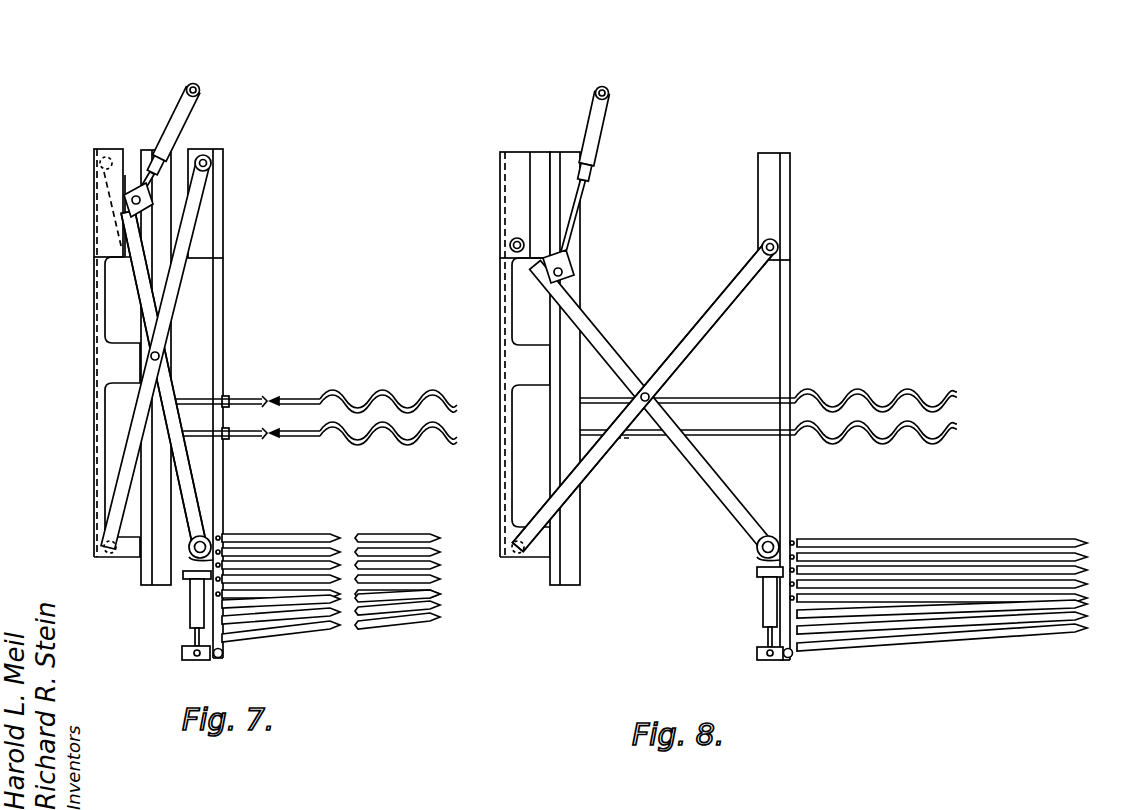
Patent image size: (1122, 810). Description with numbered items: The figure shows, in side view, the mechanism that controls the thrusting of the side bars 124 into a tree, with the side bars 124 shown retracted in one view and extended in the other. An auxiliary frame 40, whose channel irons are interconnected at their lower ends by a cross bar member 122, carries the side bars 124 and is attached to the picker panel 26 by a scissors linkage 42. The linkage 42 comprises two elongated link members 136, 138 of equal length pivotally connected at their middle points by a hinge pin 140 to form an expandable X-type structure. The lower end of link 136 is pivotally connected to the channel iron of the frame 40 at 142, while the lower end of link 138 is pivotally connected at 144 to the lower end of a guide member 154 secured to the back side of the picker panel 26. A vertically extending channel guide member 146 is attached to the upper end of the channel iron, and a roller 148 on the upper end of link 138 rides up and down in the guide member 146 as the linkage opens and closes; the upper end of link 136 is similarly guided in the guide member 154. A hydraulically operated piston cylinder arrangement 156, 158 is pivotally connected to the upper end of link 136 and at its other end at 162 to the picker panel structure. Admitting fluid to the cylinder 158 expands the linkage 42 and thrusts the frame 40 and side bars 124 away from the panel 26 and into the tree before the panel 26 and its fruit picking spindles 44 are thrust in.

In FIG. 7, the picker panel 26 is at (158, 588).
In FIG. 8, the picker panel 26 is at (570, 585).
In FIG. 7, the auxiliary frame 40 is at (225, 268).
In FIG. 7, the scissors linkage 42 is at (203, 484).
In FIG. 8, the scissors linkage 42 is at (610, 465).
In FIG. 7, the fruit picking spindles 44 is at (322, 433).
In FIG. 8, the fruit picking spindles 44 is at (775, 436).
In FIG. 7, the cross bar member 122 is at (202, 615).
In FIG. 8, the cross bar member 122 is at (795, 658).
In FIG. 7, the side bars 124 is at (378, 552).
In FIG. 8, the side bars 124 is at (1003, 555).
In FIG. 7, the link member 136 is at (130, 270).
In FIG. 8, the link member 136 is at (590, 322).
In FIG. 7, the link member 138 is at (180, 296).
In FIG. 8, the link member 138 is at (720, 297).
In FIG. 7, the hinge pin 140 is at (159, 355).
In FIG. 8, the hinge pin 140 is at (650, 396).
In FIG. 7, the pivotal connection 142 is at (201, 548).
In FIG. 8, the pivotal connection 142 is at (776, 542).
In FIG. 7, the pivotal connection 144 is at (109, 553).
In FIG. 8, the pivotal connection 144 is at (519, 555).
In FIG. 7, the channel guide member 146 is at (208, 192).
In FIG. 8, the channel guide member 146 is at (758, 172).
In FIG. 7, the roller 148 is at (203, 163).
In FIG. 8, the roller 148 is at (778, 244).
In FIG. 7, the guide member 154 is at (94, 440).
In FIG. 8, the guide member 154 is at (500, 292).
In FIG. 7, the piston 156 is at (142, 177).
In FIG. 8, the piston 156 is at (583, 202).
In FIG. 7, the cylinder 158 is at (190, 111).
In FIG. 8, the cylinder 158 is at (590, 108).
In FIG. 7, the pivotal connection 162 is at (198, 86).
In FIG. 8, the pivotal connection 162 is at (606, 87).